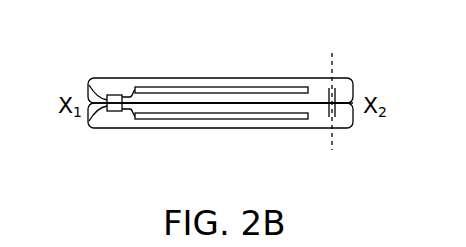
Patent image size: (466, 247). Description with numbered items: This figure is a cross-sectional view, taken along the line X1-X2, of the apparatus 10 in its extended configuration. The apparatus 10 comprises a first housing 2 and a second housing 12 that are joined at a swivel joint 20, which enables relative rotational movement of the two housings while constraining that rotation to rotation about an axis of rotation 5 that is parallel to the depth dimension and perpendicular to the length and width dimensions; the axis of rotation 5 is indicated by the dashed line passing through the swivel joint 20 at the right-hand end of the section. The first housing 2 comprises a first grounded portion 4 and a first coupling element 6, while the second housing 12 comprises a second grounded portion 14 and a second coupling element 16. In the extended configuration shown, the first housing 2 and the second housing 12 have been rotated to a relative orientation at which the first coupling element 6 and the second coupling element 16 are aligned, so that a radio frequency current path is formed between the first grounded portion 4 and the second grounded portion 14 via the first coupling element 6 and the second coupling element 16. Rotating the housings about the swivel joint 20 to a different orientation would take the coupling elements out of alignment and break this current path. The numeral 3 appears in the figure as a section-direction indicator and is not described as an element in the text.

The first housing 2 is at (108, 78).
The section arrow 3 is at (213, 76).
The first grounded portion 4 is at (178, 87).
The axis of rotation 5 is at (330, 62).
The first coupling element 6 is at (107, 96).
The apparatus 10 is at (216, 141).
The second housing 12 is at (287, 128).
The second grounded portion 14 is at (152, 128).
The second coupling element 16 is at (90, 128).
The swivel joint 20 is at (340, 97).